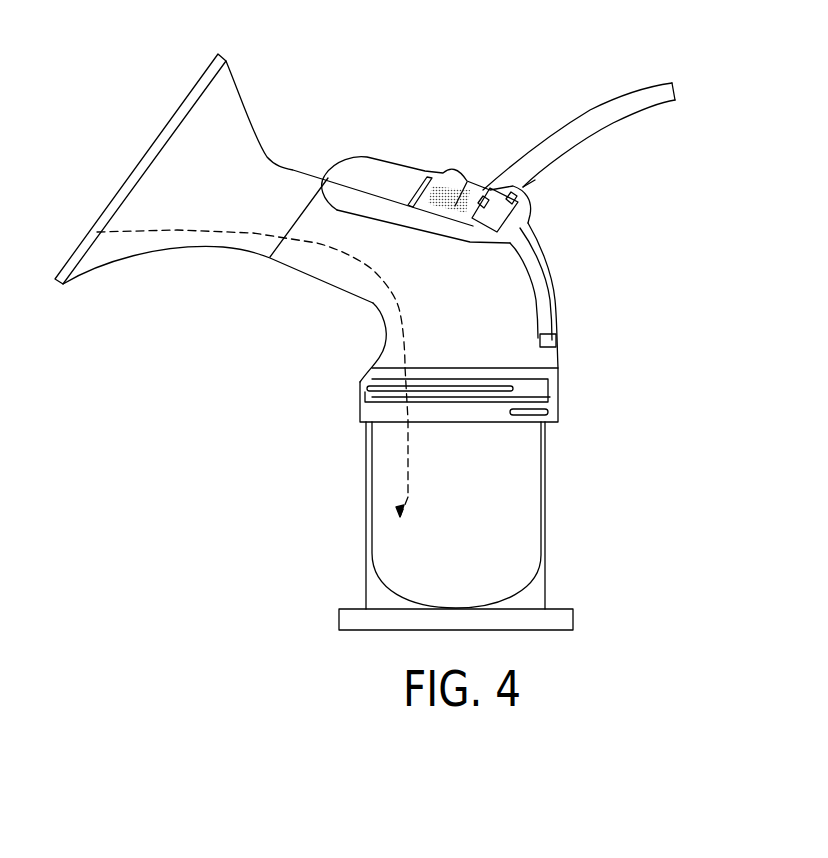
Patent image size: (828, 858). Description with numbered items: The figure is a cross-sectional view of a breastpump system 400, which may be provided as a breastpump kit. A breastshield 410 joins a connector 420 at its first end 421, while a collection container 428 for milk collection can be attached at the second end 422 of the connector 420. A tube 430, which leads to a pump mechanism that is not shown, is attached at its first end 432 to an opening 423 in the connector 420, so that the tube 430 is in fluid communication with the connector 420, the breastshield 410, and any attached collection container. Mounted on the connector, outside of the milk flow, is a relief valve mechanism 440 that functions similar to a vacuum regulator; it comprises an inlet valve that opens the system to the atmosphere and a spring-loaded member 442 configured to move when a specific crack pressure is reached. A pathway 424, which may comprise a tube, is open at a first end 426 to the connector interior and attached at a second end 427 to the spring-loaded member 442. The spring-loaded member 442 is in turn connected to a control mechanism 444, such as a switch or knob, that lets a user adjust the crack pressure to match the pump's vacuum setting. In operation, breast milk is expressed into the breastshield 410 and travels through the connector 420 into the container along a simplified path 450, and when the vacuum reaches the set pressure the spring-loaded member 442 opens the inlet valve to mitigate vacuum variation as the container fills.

The breastpump system 400 is at (165, 394).
The breastshield 410 is at (225, 98).
The connector 420 is at (382, 367).
The first end 421 is at (310, 198).
The second end 422 is at (510, 423).
The opening 423 is at (525, 186).
The pathway 424 is at (543, 310).
The first end 426 is at (558, 345).
The second end 427 is at (488, 185).
The collection container 428 is at (522, 508).
The tube 430 is at (590, 118).
The first end 432 is at (523, 207).
The relief valve mechanism 440 is at (520, 226).
The spring-loaded member 442 is at (452, 208).
The control mechanism 444 is at (447, 172).
The simplified path 450 is at (122, 232).